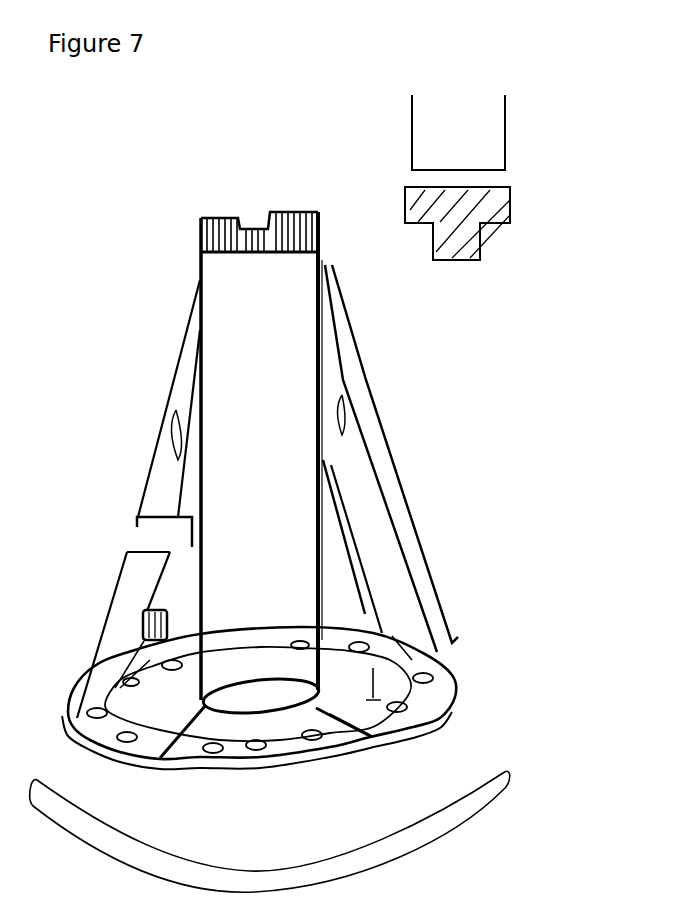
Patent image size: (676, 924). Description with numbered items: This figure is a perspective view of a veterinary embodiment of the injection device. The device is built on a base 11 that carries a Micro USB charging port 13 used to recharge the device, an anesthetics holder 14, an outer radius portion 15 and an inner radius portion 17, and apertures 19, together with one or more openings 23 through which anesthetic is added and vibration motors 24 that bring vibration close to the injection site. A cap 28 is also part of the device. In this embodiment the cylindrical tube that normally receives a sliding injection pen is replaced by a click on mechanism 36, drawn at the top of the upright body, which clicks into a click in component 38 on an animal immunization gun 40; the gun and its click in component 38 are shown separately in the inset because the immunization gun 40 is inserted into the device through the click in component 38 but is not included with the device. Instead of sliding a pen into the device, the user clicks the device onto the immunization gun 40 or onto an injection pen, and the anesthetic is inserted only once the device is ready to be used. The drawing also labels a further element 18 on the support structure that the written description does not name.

The base 11 is at (410, 724).
The Micro USB charging port 13 is at (192, 534).
The anesthetics holder 14 is at (413, 541).
The outer radius portion 15 is at (165, 752).
The inner radius portion 17 is at (273, 712).
The inner support strut 18 is at (365, 610).
The apertures 19 is at (447, 693).
The opening to add anesthetic 23 is at (171, 424).
The vibration motors 24 is at (143, 625).
The cap 28 is at (447, 832).
The click on mechanism 36 is at (318, 243).
The click in component 38 is at (480, 258).
The animal immunization gun 40 is at (457, 133).